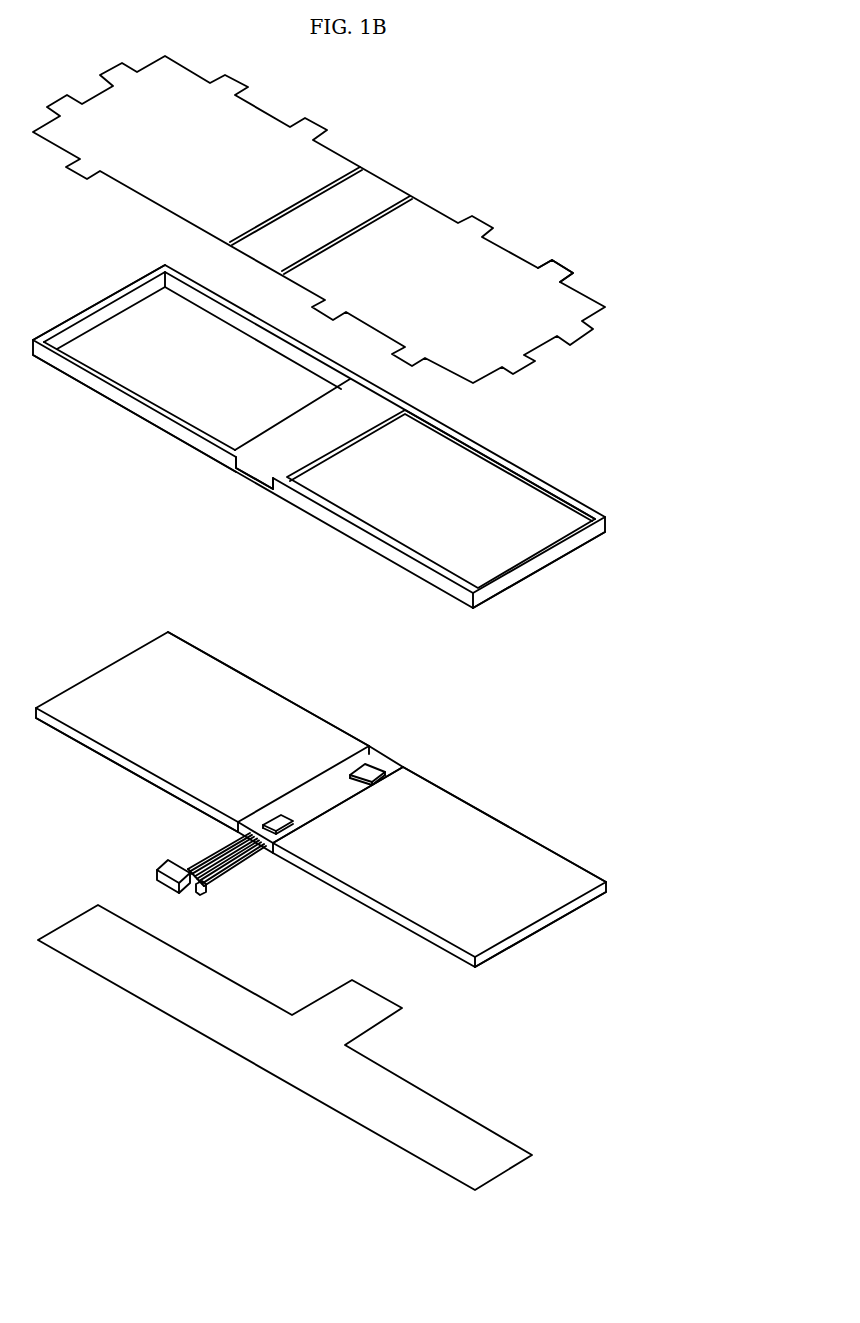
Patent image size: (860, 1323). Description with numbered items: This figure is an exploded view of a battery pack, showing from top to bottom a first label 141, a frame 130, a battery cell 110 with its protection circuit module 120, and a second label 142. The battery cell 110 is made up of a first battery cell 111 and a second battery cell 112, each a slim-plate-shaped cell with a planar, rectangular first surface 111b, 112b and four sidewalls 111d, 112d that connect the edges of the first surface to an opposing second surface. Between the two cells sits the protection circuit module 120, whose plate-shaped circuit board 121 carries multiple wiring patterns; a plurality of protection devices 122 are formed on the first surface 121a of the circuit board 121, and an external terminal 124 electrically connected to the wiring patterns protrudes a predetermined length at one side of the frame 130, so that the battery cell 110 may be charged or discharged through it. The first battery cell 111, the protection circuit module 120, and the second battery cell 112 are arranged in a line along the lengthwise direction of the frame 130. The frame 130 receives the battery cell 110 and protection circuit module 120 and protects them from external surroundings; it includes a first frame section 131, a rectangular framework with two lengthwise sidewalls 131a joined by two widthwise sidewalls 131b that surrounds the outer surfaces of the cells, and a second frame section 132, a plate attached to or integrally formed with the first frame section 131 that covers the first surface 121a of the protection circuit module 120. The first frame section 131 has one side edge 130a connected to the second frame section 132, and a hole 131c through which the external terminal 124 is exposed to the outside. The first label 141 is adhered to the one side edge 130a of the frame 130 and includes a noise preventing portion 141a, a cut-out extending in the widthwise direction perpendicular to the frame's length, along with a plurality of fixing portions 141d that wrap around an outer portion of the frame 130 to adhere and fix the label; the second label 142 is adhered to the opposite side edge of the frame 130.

The battery cell 110 is at (347, 820).
The first battery cell 111 is at (202, 724).
The first surface of the first battery cell 111b is at (265, 697).
The sidewalls of the first battery cell 111d is at (120, 763).
The second battery cell 112 is at (439, 886).
The first surface of the second battery cell 112b is at (500, 828).
The sidewalls of the second battery cell 112d is at (510, 943).
The protection circuit module 120 is at (260, 808).
The circuit board 121 is at (312, 814).
The first surface of the circuit board 121a is at (333, 783).
The protection devices 122 is at (278, 836).
The external terminal 124 is at (163, 868).
The frame 130 is at (340, 429).
The one side edge 130a is at (113, 384).
The first frame section 131 is at (363, 540).
The lengthwise sidewalls 131a is at (187, 288).
The widthwise sidewalls 131b is at (543, 562).
The hole 131c is at (253, 478).
The second frame section 132 is at (323, 438).
The first label 141 is at (357, 219).
The noise preventing portion 141a is at (401, 196).
The fixing portions 141d is at (561, 270).
The second label 142 is at (468, 1122).